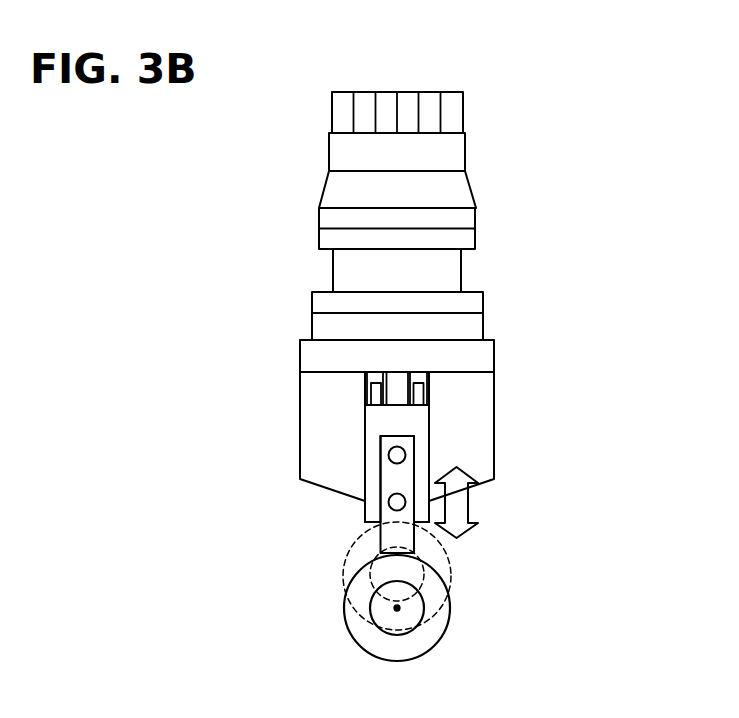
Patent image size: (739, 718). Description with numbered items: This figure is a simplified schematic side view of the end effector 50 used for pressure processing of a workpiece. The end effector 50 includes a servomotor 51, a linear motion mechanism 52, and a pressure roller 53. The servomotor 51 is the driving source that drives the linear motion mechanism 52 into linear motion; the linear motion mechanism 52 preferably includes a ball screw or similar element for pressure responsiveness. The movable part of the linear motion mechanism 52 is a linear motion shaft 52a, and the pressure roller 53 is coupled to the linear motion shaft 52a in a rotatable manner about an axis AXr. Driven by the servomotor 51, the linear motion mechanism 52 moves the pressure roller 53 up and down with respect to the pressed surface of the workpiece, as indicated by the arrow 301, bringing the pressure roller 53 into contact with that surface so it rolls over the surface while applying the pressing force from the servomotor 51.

The end effector 50 is at (650, 78).
The servomotor 51 is at (502, 92).
The linear motion mechanism 52 is at (458, 402).
The linear motion shaft 52a is at (380, 541).
The arrow 301 is at (472, 507).
The pressure roller 53 is at (450, 607).
The axis AXr is at (397, 608).